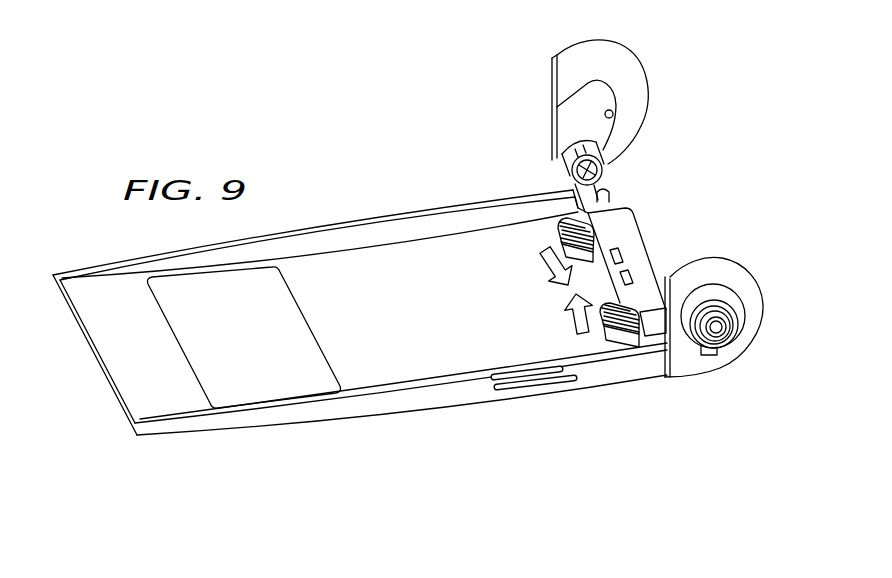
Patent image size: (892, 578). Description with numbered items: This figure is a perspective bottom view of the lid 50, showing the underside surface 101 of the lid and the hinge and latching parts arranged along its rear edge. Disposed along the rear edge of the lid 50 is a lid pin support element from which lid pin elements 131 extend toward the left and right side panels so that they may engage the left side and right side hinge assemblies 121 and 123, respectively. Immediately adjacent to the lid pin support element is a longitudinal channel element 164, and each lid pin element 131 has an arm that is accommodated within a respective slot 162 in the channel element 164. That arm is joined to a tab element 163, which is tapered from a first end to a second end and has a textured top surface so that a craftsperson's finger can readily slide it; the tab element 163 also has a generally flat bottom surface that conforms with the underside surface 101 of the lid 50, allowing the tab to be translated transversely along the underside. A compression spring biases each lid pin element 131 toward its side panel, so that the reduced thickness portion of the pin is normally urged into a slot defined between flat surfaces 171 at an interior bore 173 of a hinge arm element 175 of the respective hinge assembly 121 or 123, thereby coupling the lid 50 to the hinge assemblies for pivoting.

The lid 50 is at (367, 418).
The underside surface 101 is at (436, 257).
The left side hinge assembly 121 is at (717, 367).
The right side hinge assembly 123 is at (621, 43).
The lid pin element 131 is at (611, 193).
The slot 162 is at (613, 287).
The tab element 163 is at (563, 238).
The channel element 164 is at (613, 237).
The flat surfaces 171 is at (571, 169).
The interior bore 173 is at (603, 166).
The hinge arm element 175 is at (560, 120).